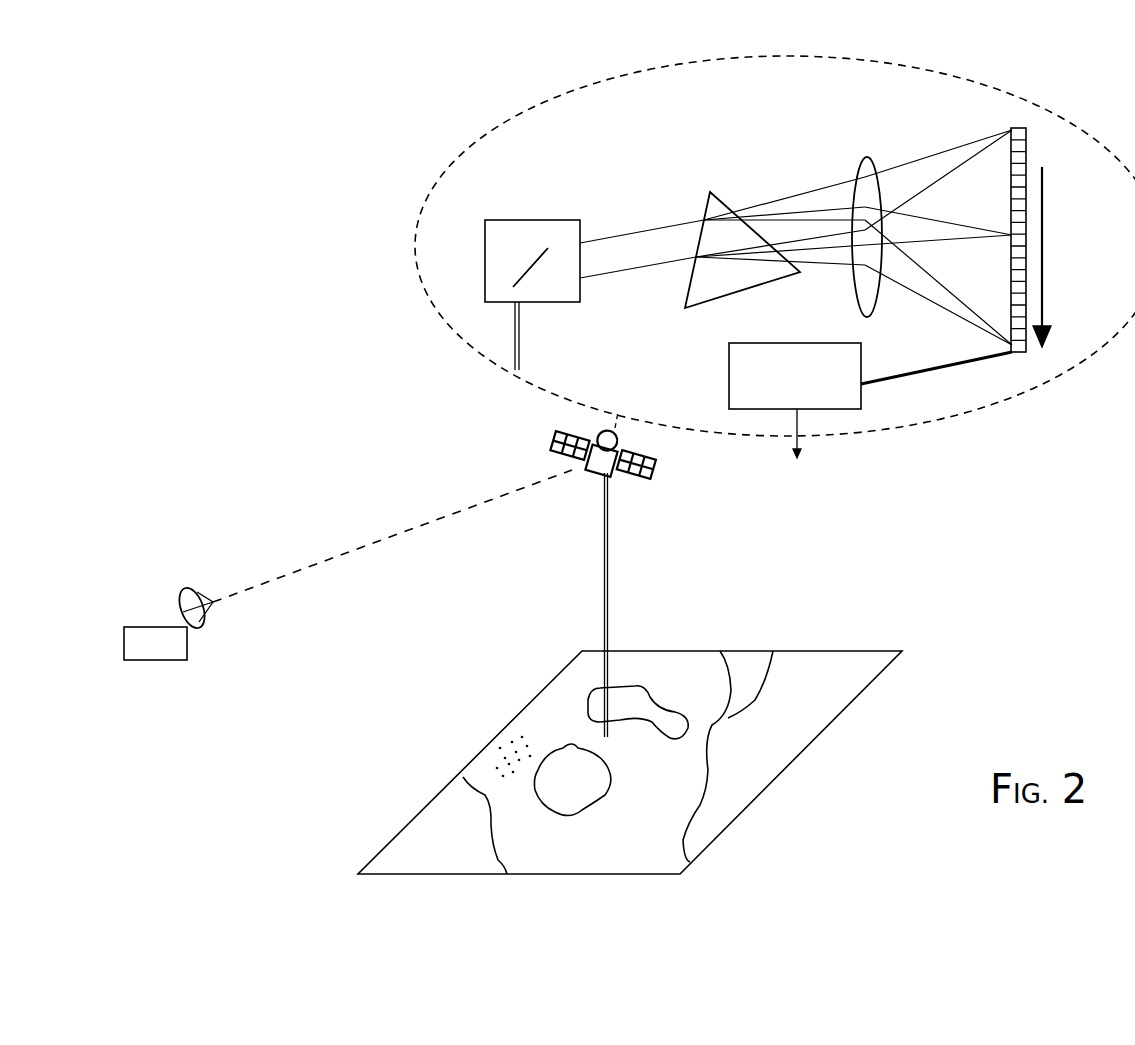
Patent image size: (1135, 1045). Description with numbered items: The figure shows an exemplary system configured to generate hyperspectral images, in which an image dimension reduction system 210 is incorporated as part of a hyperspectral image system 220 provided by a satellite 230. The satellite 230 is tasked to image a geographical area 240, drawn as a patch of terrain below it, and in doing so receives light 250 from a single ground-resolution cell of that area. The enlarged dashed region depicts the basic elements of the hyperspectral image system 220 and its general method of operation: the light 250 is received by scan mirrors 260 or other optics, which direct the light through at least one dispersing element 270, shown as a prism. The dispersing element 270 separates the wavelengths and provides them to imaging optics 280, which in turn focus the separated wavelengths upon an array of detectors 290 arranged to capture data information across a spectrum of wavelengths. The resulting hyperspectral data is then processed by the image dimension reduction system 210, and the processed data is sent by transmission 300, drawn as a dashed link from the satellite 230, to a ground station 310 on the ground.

The image dimension reduction system 210 is at (853, 410).
The hyperspectral image system 220 is at (1013, 398).
The satellite 230 is at (657, 478).
The geographical area 240 is at (470, 757).
The light 250 is at (521, 320).
The scan mirrors 260 is at (545, 220).
The dispersing element 270 is at (708, 192).
The imaging optics 280 is at (865, 157).
The array of detectors 290 is at (1012, 128).
The transmission 300 is at (376, 540).
The ground station 310 is at (145, 625).